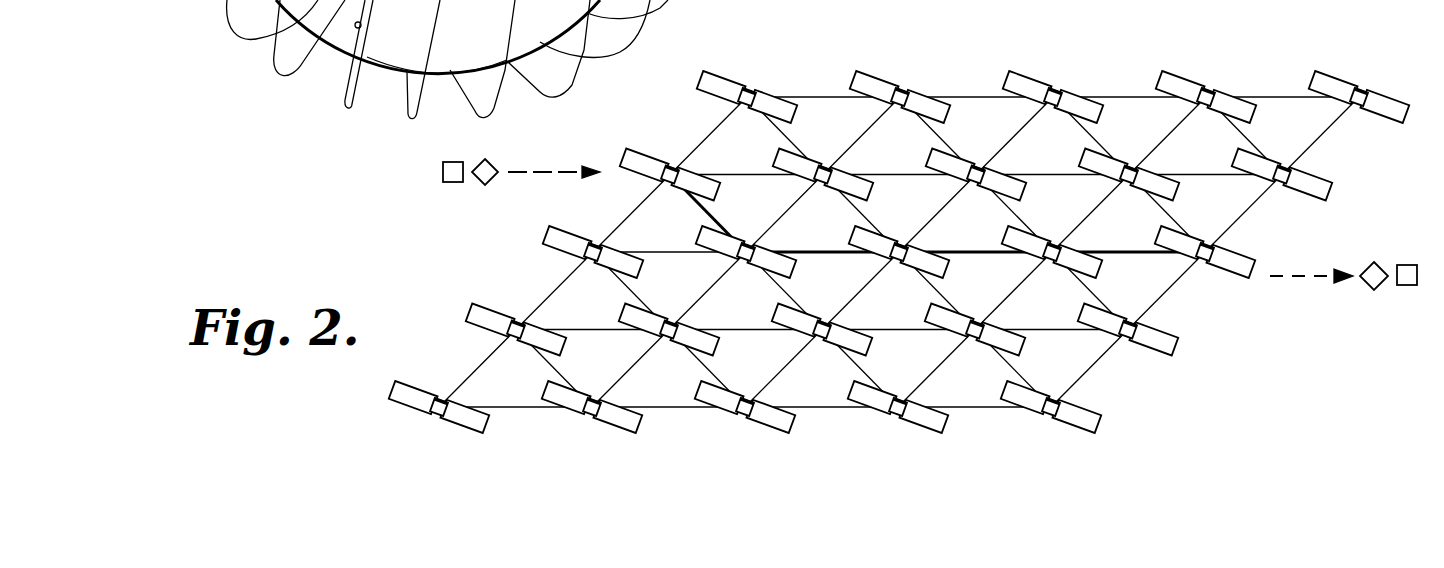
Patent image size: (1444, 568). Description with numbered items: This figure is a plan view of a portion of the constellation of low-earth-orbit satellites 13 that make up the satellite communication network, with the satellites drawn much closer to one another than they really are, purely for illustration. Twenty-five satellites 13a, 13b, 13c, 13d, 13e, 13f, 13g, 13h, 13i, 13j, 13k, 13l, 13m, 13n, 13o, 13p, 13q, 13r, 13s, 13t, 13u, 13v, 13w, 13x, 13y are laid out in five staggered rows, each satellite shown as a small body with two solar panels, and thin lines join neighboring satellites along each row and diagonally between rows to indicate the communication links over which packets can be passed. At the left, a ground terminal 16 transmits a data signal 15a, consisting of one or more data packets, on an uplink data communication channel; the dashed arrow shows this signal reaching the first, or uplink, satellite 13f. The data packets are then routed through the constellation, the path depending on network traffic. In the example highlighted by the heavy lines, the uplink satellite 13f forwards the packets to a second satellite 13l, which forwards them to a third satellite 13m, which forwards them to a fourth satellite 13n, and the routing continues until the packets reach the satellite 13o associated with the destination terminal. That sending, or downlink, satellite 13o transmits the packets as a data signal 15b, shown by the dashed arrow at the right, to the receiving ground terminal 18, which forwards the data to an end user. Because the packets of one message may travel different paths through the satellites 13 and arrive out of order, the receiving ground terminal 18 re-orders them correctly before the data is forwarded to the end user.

The satellites 13 is at (336, 0).
The satellite 13a is at (747, 89).
The satellite 13b is at (900, 89).
The satellite 13c is at (1053, 89).
The satellite 13d is at (1206, 89).
The satellite 13e is at (1359, 89).
The first satellite 13f is at (670, 166).
The satellite 13g is at (823, 166).
The satellite 13h is at (976, 166).
The satellite 13i is at (1129, 166).
The satellite 13j is at (1282, 166).
The satellite 13k is at (593, 244).
The second satellite 13l is at (746, 244).
The third satellite 13m is at (899, 244).
The fourth satellite 13n is at (1052, 244).
The downlink satellite 13o is at (1205, 244).
The satellite 13p is at (516, 322).
The satellite 13q is at (669, 322).
The satellite 13r is at (822, 322).
The satellite 13s is at (975, 322).
The satellite 13t is at (1128, 322).
The satellite 13u is at (439, 399).
The satellite 13v is at (592, 399).
The satellite 13w is at (745, 399).
The satellite 13x is at (898, 399).
The satellite 13y is at (1051, 399).
The data signal 15a is at (486, 185).
The data signal 15b is at (1374, 290).
The ground terminal 16 is at (444, 182).
The receiving ground terminal 18 is at (1407, 265).